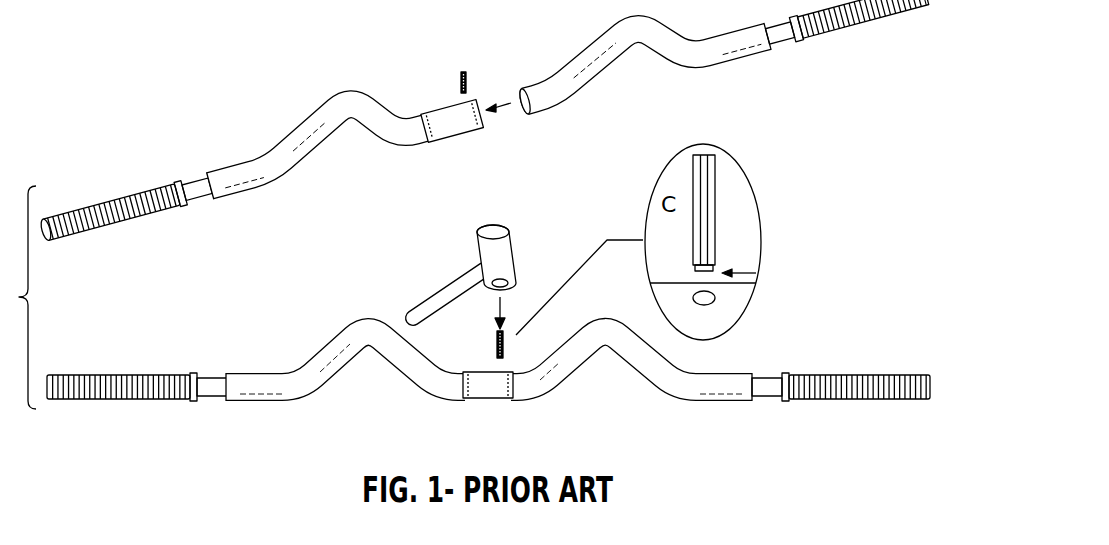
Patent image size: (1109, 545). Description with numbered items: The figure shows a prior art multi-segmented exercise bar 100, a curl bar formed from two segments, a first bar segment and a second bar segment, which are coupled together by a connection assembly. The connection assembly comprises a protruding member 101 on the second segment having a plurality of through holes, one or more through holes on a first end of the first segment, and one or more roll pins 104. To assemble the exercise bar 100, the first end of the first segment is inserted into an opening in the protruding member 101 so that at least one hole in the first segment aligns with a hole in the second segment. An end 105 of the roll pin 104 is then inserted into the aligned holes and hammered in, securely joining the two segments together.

The multi-segmented exercise bar 100 is at (187, 70).
The protruding member 101 is at (446, 110).
The roll pin 104 is at (718, 247).
The end of the roll pin 105 is at (718, 268).